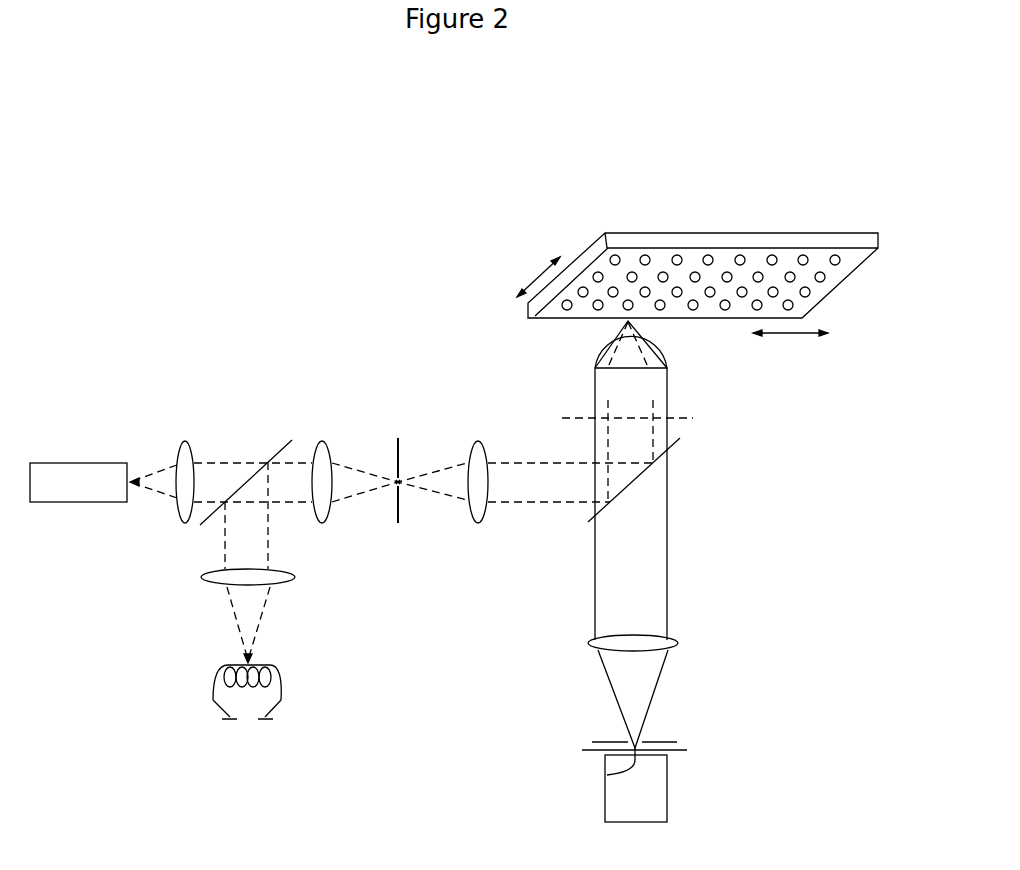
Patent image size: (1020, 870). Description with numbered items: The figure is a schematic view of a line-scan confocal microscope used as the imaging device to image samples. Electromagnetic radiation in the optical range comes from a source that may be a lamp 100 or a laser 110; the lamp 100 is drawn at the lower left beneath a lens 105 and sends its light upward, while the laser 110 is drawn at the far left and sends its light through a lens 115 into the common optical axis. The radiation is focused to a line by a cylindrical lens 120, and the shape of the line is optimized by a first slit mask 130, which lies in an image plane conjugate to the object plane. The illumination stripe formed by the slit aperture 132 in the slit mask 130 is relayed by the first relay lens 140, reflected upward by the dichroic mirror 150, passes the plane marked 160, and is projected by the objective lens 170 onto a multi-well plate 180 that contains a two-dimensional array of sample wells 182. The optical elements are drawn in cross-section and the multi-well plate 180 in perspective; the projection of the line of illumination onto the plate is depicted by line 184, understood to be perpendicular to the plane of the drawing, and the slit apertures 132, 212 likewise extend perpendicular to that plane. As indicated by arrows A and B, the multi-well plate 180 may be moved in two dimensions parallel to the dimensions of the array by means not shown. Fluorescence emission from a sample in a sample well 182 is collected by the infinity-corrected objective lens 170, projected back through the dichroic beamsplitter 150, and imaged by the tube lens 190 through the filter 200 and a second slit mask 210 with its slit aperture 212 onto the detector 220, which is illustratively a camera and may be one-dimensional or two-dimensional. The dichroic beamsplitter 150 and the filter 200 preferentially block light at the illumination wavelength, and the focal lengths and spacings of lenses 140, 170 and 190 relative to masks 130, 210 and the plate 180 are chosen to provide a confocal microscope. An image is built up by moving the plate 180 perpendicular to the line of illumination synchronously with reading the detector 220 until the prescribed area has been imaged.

The lamp 100 is at (282, 680).
The condenser lens 105 is at (280, 585).
The laser 110 is at (88, 462).
The lens 115 is at (177, 447).
The cylindrical lens 120 is at (327, 447).
The first slit mask 130 is at (402, 446).
The slit aperture 132 is at (406, 490).
The first relay lens 140 is at (487, 447).
The dichroic mirror 150 is at (588, 522).
The intermediate plane 160 is at (573, 418).
The objective lens 170 is at (647, 380).
The multi-well plate 180 is at (703, 245).
The sample well 182 is at (616, 248).
The line of illumination 184 is at (620, 328).
The tube lens 190 is at (680, 640).
The filter 200 is at (663, 740).
The second slit mask 210 is at (588, 747).
The slit aperture 212 is at (620, 772).
The detector 220 is at (668, 808).
The arrow A is at (537, 275).
The arrow B is at (793, 337).